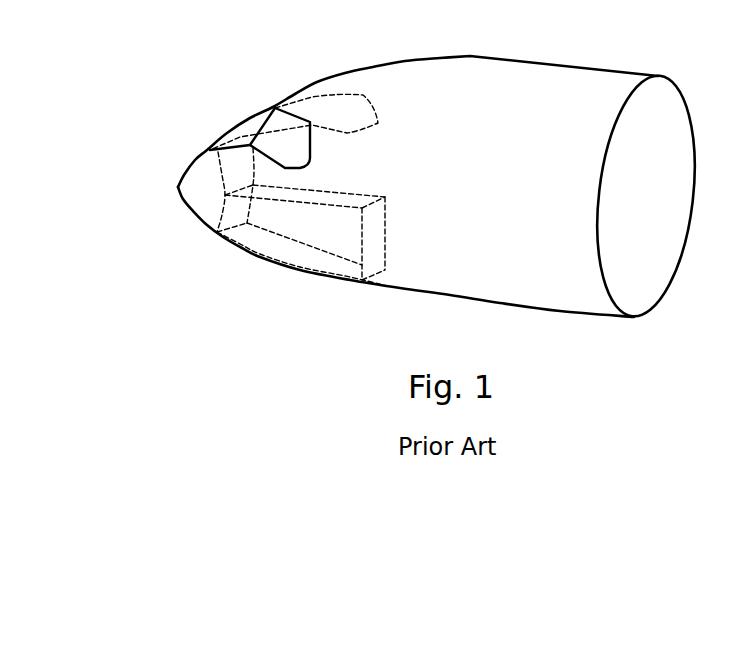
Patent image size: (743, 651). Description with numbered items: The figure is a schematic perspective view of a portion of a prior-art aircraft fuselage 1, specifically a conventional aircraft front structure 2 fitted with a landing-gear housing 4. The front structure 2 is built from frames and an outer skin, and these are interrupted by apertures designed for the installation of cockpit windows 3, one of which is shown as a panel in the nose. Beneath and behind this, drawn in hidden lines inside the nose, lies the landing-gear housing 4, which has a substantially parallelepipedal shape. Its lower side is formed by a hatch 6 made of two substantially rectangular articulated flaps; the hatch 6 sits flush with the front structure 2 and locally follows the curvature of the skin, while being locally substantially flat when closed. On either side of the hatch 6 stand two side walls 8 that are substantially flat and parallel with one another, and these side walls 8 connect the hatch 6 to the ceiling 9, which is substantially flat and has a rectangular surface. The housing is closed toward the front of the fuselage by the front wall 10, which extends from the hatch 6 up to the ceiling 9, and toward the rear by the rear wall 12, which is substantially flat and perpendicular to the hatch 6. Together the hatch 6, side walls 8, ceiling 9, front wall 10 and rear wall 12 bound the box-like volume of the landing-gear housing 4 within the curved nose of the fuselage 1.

The aircraft fuselage 1 is at (375, 178).
The aircraft front structure 2 is at (313, 63).
The cockpit windows 3 is at (230, 103).
The landing-gear housing 4 is at (312, 287).
The hatch 6 is at (284, 227).
The side walls 8 is at (265, 215).
The ceiling 9 is at (347, 207).
The front wall 10 is at (232, 215).
The rear wall 12 is at (374, 250).